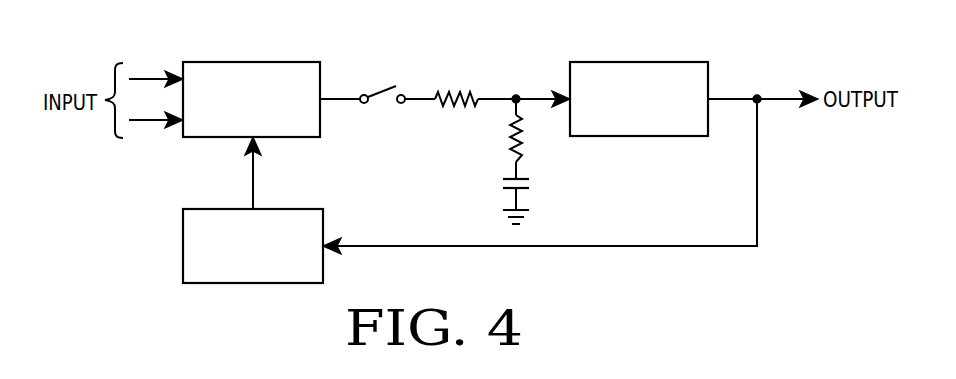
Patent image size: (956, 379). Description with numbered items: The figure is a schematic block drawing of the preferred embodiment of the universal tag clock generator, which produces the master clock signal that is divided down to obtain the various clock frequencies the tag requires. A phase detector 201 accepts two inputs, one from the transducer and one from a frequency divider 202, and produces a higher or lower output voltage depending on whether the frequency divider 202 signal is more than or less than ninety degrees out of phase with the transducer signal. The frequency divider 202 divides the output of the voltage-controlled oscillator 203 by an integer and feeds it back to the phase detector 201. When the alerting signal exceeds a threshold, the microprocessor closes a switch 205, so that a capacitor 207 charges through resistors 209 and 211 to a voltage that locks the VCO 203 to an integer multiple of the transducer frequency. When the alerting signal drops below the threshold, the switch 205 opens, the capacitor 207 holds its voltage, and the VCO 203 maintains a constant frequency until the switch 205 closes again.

The phase detector 201 is at (256, 62).
The frequency divider 202 is at (216, 209).
The voltage-controlled oscillator (VCO) 203 is at (643, 62).
The switch 205 is at (385, 86).
The capacitor 207 is at (528, 179).
The resistor 209 is at (512, 128).
The resistor 211 is at (461, 89).